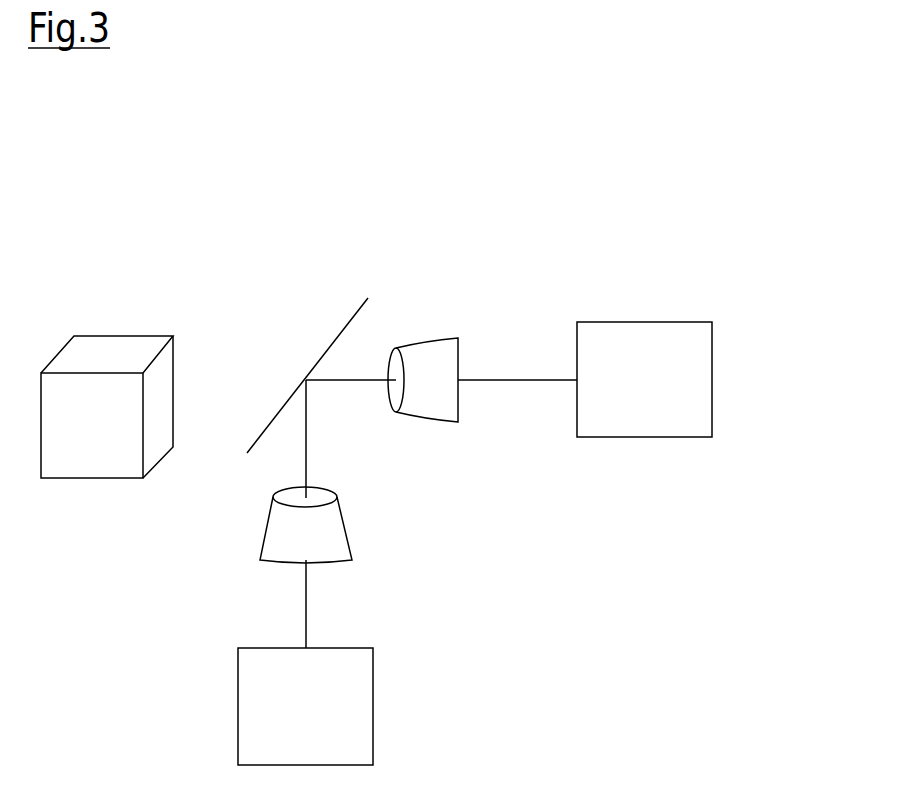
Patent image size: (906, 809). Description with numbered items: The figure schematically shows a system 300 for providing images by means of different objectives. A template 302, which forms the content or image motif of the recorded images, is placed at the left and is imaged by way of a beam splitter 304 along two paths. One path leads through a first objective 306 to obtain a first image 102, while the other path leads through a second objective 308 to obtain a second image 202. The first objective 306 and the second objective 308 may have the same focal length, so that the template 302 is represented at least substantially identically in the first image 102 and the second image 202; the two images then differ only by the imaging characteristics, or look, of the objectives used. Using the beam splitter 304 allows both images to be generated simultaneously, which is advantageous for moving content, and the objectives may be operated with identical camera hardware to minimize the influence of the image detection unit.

The system 300 is at (738, 253).
The template 302 is at (165, 360).
The beam splitter 304 is at (312, 365).
The first objective 306 is at (450, 335).
The second objective 308 is at (338, 528).
The first image 102 is at (695, 378).
The second image 202 is at (358, 710).